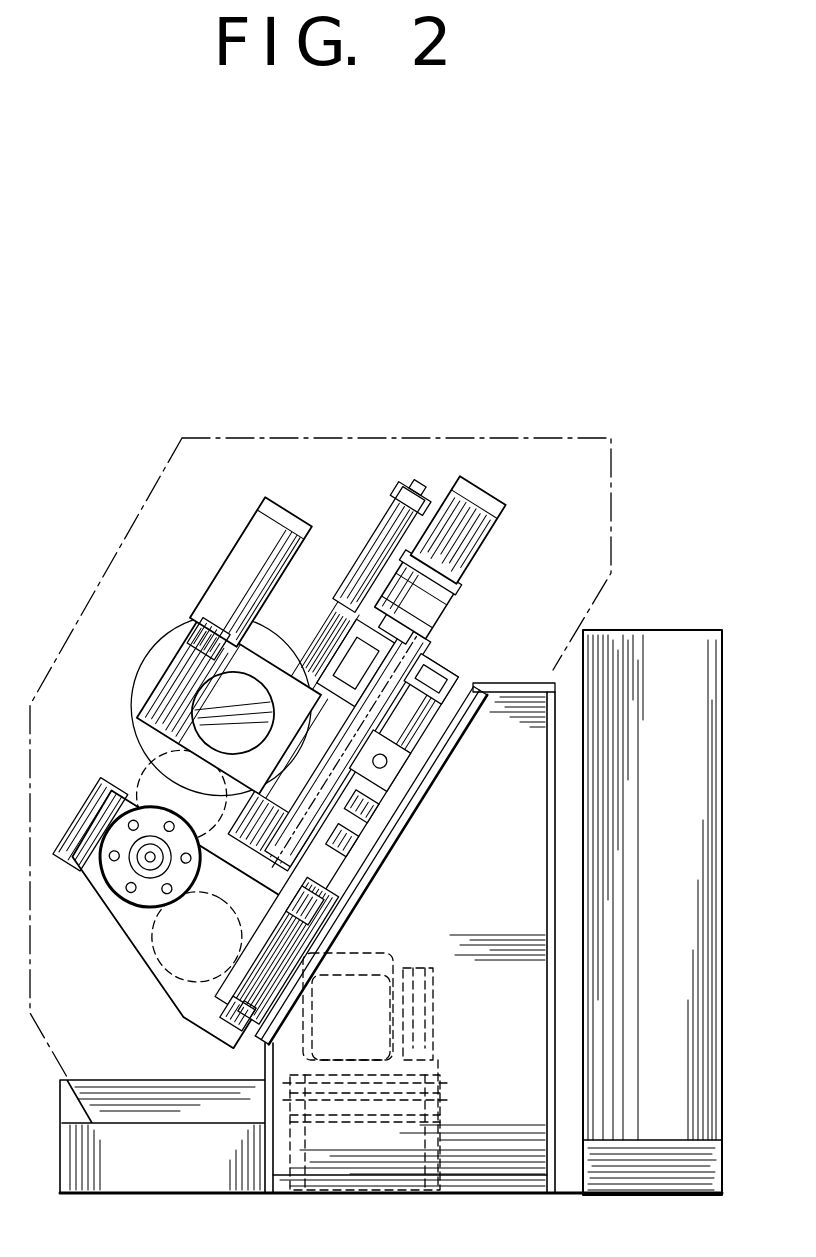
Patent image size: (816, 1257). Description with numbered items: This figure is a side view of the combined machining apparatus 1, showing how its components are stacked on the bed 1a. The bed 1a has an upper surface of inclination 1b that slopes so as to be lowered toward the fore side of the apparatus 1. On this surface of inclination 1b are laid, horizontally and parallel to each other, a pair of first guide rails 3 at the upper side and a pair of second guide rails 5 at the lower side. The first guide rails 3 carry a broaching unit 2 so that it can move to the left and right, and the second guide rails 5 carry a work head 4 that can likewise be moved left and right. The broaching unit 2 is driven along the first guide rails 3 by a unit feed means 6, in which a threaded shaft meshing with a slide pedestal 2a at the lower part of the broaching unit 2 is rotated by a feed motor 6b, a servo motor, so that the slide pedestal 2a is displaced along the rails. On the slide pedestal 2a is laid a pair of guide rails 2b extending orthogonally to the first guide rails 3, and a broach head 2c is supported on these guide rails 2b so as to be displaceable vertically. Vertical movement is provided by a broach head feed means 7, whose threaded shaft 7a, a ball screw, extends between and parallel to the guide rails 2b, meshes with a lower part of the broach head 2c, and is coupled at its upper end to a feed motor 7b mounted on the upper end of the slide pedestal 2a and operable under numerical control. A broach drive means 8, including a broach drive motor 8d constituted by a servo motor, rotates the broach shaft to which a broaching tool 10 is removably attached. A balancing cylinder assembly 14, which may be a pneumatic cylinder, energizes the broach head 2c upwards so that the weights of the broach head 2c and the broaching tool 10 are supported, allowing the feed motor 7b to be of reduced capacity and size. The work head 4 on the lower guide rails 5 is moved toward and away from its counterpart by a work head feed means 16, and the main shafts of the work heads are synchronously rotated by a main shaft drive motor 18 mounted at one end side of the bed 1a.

The combined machining apparatus 1 is at (563, 1004).
The bed 1a is at (553, 878).
The surface of inclination 1b is at (333, 918).
The broaching unit 2 is at (165, 668).
The slide pedestal 2a is at (400, 653).
The guide rails 2b is at (316, 692).
The broach head 2c is at (198, 638).
The first guide rails 3 is at (433, 690).
The work head 4 is at (113, 903).
The second guide rails 5 is at (330, 918).
The unit feed means 6 is at (422, 806).
The feed motor 6b is at (377, 780).
The broach head feed means 7 is at (477, 482).
The threaded shaft 7a is at (407, 833).
The feed motor 7b is at (460, 544).
The broach drive means 8 is at (222, 549).
The broach drive motor 8d is at (250, 538).
The broaching tool 10 is at (132, 691).
The balancing cylinder assembly 14 is at (400, 530).
The work head feed means 16 is at (132, 842).
The main shaft drive motor 18 is at (170, 953).